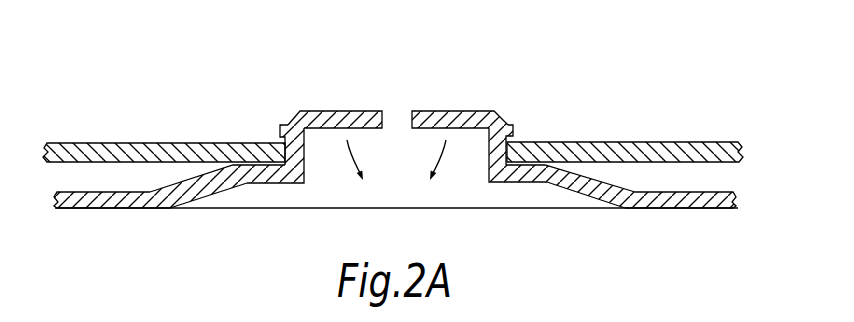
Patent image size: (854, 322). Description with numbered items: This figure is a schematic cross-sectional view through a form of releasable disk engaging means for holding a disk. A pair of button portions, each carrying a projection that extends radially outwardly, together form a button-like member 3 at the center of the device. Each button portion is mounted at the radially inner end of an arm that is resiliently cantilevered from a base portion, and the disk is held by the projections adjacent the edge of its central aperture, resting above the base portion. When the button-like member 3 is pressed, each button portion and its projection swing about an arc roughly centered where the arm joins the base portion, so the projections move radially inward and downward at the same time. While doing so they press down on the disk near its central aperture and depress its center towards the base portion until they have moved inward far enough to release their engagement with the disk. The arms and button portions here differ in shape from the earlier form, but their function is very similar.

The button-like member 3 is at (402, 78).